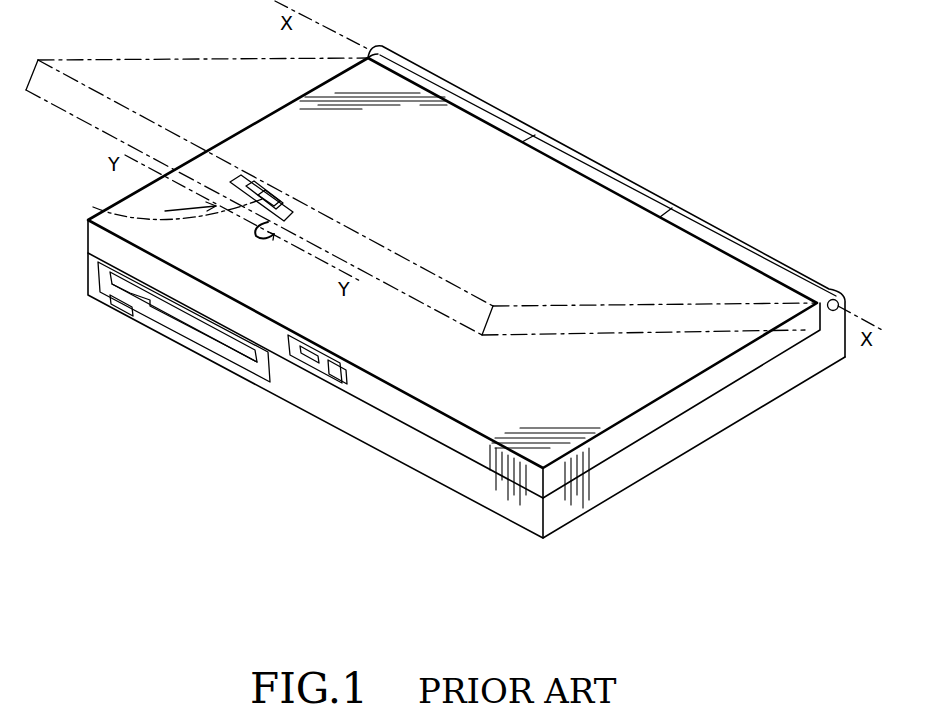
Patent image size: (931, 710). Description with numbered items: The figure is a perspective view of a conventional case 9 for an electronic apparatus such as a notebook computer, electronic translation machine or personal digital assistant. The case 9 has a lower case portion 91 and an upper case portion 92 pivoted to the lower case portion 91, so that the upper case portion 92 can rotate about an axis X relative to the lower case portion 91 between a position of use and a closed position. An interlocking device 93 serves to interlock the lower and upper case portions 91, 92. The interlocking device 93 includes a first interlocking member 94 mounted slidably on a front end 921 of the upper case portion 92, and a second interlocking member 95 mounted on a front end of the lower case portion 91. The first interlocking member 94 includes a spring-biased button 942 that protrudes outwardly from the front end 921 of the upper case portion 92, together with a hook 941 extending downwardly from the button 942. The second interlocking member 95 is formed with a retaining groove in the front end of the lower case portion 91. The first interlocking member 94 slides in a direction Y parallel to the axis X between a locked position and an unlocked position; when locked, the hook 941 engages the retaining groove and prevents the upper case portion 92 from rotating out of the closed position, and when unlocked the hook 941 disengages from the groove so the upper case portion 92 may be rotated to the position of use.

The case 9 is at (441, 297).
The lower case portion 91 is at (613, 477).
The upper case portion 92 is at (466, 297).
The front end 921 is at (481, 450).
The interlocking device 93 is at (292, 379).
The first interlocking member 94 is at (231, 207).
The hook 941 is at (256, 236).
The spring-biased button 942 is at (98, 205).
The second interlocking member 95 is at (330, 388).